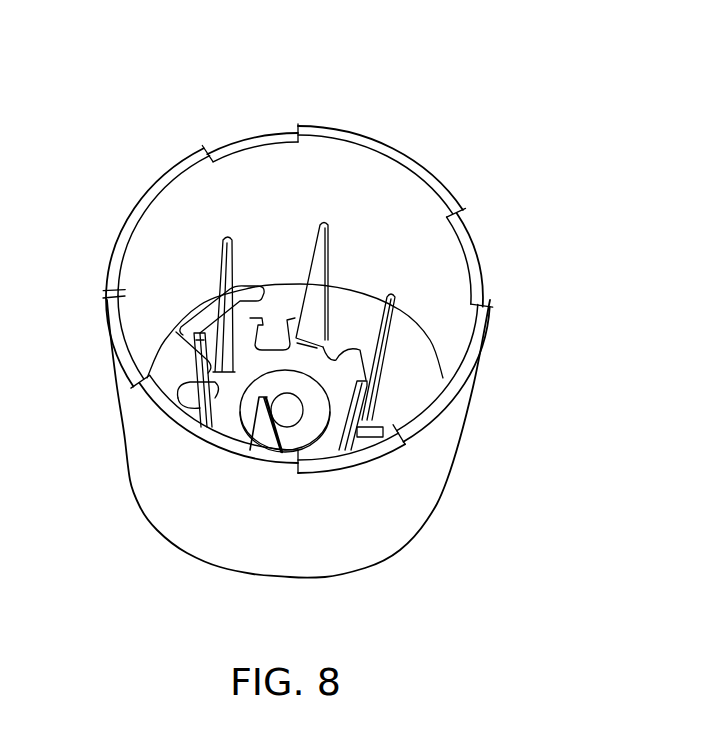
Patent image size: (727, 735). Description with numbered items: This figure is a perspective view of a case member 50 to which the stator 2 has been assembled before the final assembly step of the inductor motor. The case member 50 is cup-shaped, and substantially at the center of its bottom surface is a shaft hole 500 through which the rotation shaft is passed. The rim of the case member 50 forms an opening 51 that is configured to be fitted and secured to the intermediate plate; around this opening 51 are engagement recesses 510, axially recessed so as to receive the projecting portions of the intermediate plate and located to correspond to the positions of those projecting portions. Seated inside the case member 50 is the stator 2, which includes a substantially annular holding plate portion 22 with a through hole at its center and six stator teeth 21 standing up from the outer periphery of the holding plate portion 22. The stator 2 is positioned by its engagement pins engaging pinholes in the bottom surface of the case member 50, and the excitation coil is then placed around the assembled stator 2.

The stator 2 is at (333, 238).
The stator teeth 21 is at (242, 352).
The holding plate portion 22 is at (329, 327).
The case member 50 is at (405, 492).
The opening 51 is at (370, 138).
The engagement recesses 510 is at (259, 137).
The shaft hole 500 is at (288, 405).